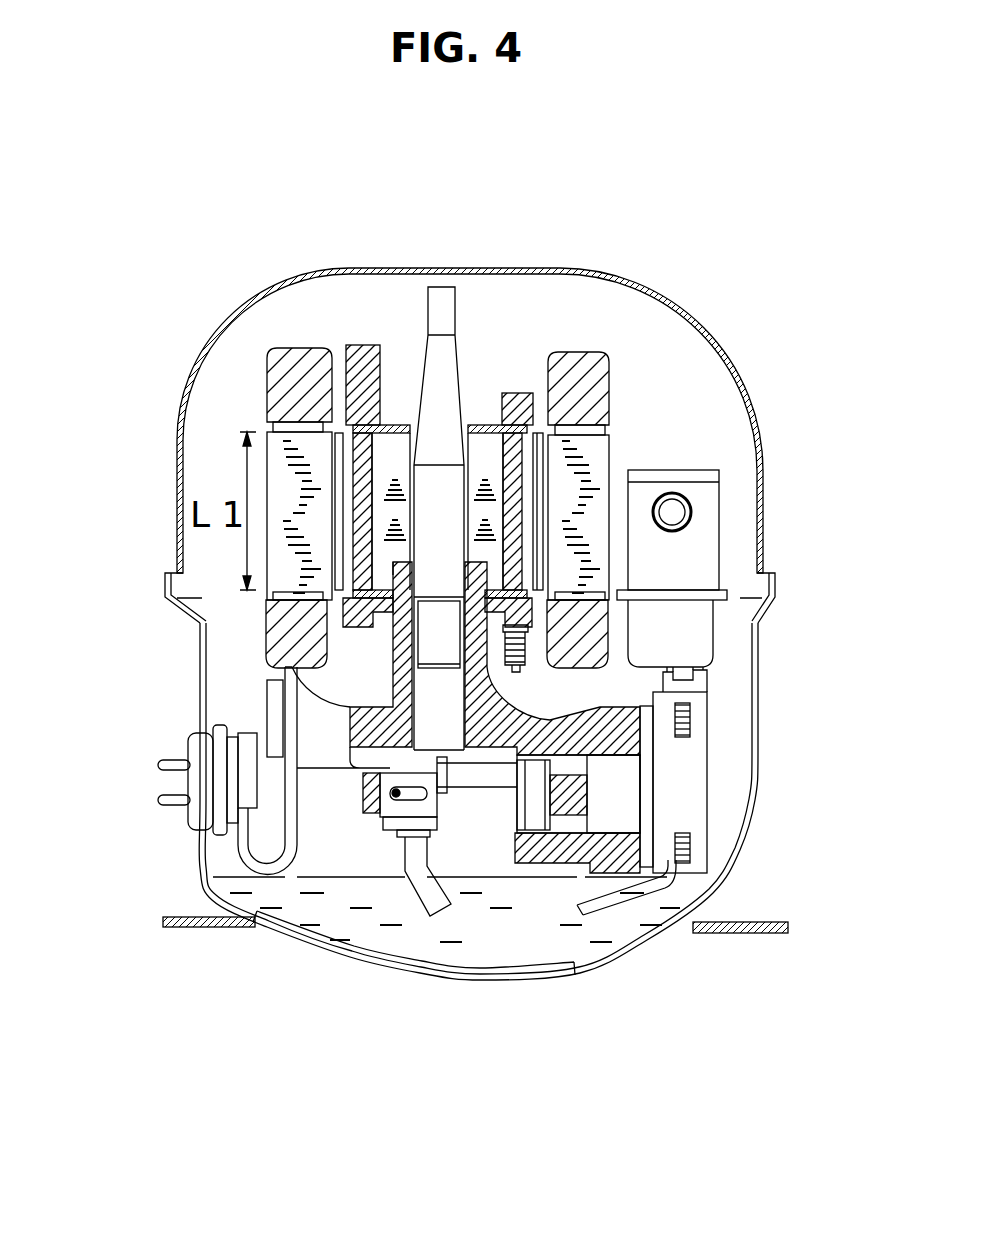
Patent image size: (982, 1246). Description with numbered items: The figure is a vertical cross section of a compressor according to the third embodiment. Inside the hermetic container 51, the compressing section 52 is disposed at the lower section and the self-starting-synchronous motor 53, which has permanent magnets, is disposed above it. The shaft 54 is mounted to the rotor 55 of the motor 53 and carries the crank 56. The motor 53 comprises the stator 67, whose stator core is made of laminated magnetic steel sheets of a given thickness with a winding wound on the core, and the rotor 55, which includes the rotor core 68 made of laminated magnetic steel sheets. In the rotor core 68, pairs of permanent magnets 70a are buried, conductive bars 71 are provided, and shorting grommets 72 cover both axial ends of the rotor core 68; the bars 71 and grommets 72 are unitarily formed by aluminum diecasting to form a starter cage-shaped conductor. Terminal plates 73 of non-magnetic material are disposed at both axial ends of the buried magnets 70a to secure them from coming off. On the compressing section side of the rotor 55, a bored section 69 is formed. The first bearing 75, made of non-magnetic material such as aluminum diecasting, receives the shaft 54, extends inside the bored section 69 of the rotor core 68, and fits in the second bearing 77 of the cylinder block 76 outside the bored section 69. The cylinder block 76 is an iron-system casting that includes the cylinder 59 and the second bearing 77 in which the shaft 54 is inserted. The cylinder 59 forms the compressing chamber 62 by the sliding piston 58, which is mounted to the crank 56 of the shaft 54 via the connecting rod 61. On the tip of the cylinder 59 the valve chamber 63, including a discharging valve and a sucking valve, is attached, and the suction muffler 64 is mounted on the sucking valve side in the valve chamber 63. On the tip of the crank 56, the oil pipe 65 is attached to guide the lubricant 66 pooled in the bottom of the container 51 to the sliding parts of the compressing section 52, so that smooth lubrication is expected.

The hermetic container 51 is at (252, 297).
The compressing section 52 is at (732, 708).
The self-starting-synchronous motor 53 is at (208, 482).
The shaft 54 is at (443, 728).
The rotor 55 is at (372, 440).
The crank 56 is at (385, 800).
The piston 58 is at (560, 845).
The cylinder 59 is at (623, 797).
The connecting rod 61 is at (472, 812).
The compressing chamber 62 is at (677, 822).
The valve chamber 63 is at (690, 830).
The suction muffler 64 is at (695, 552).
The oil pipe 65 is at (423, 887).
The lubricant 66 is at (637, 920).
The stator 67 is at (283, 468).
The rotor core 68 is at (434, 446).
The bored section 69 is at (393, 575).
The permanent magnets 70a is at (510, 497).
The conductive bars 71 is at (530, 450).
The shorting grommets 72 is at (516, 400).
The terminal plates 73 is at (377, 413).
The first bearing 75 is at (388, 598).
The cylinder block 76 is at (733, 645).
The second bearing 77 is at (400, 657).